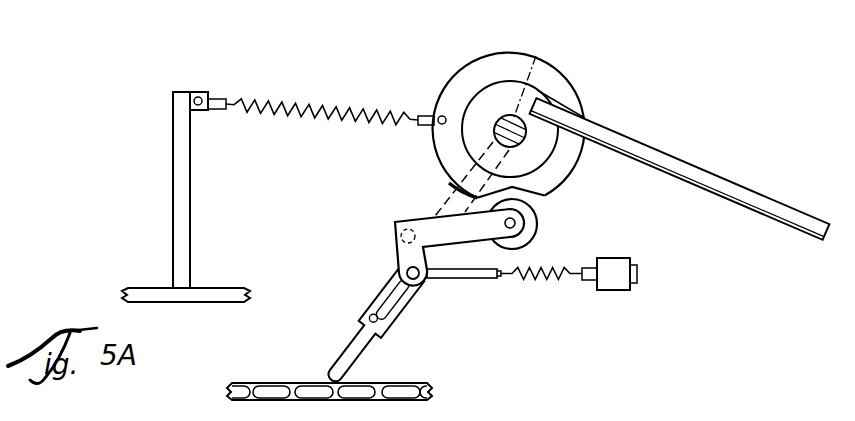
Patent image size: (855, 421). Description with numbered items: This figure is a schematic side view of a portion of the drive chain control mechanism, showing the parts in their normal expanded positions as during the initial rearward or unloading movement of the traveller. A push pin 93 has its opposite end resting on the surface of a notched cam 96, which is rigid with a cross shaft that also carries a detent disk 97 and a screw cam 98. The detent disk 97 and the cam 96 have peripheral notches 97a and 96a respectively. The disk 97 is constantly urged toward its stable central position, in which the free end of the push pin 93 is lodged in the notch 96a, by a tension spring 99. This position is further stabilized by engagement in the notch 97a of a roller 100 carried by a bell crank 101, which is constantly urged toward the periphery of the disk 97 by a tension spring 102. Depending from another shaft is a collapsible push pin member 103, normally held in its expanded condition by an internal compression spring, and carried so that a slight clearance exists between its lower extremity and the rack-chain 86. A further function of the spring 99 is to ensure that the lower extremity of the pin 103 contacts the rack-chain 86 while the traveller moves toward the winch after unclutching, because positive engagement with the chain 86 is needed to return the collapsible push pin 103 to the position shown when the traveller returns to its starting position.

The rack-chain 86 is at (266, 383).
The push pin 93 is at (682, 153).
The notched cam 96 is at (548, 52).
The peripheral notch 96a is at (543, 92).
The detent disk 97 is at (458, 78).
The peripheral notch 97a is at (537, 220).
The screw cam 98 is at (508, 115).
The tension spring 99 is at (289, 138).
The roller 100 is at (535, 236).
The bell crank 101 is at (444, 222).
The tension spring 102 is at (551, 283).
The collapsible push pin member 103 is at (377, 287).